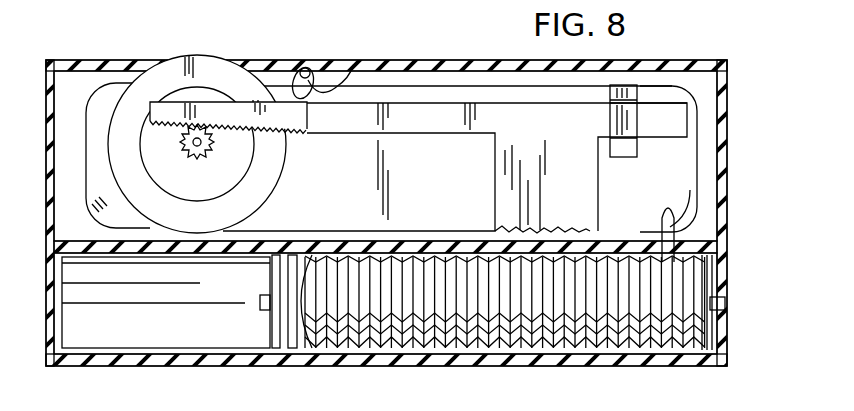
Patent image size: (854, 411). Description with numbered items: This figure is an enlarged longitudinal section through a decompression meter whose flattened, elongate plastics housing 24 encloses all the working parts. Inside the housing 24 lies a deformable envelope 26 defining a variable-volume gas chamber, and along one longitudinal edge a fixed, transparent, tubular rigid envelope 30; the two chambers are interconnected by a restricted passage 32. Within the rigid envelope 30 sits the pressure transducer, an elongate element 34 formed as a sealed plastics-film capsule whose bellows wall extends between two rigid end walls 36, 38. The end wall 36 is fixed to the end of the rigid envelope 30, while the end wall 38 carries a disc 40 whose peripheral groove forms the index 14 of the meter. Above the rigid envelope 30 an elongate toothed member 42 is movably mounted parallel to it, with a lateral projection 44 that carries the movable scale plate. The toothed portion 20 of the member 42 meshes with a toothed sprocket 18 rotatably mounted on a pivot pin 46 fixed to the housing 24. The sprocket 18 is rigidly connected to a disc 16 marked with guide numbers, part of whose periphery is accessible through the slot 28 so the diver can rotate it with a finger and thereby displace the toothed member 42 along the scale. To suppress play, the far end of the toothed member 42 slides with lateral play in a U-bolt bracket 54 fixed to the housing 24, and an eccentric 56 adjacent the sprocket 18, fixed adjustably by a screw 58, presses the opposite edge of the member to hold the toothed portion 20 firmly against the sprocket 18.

The index 14 is at (291, 346).
The disc 16 is at (118, 112).
The toothed sprocket 18 is at (184, 139).
The toothed portion 20 is at (292, 134).
The housing 24 is at (735, 114).
The deformable envelope 26 is at (672, 165).
The slot 28 is at (255, 62).
The rigid envelope 30 is at (143, 350).
The restricted passage 32 is at (663, 247).
The elongate element 34 is at (455, 352).
The end wall 36 is at (702, 354).
The end wall 38 is at (303, 308).
The disc 40 is at (277, 275).
The toothed member 42 is at (426, 107).
The lateral projection 44 is at (508, 167).
The pivot pin 46 is at (198, 147).
The bracket 54 is at (623, 85).
The eccentric 56 is at (354, 67).
The screw 58 is at (308, 70).